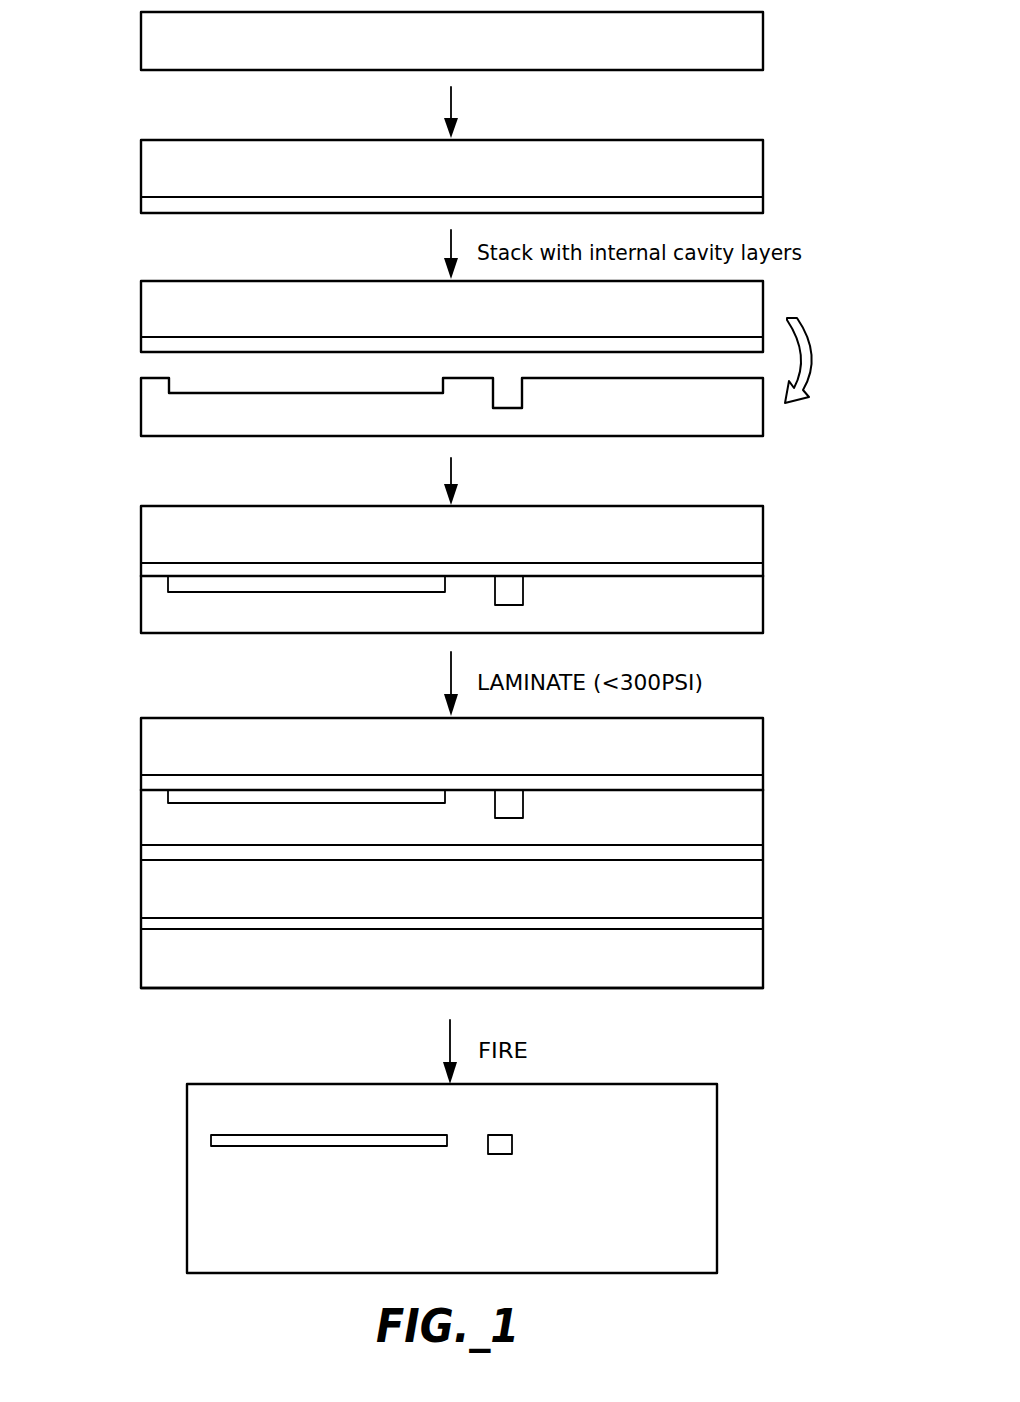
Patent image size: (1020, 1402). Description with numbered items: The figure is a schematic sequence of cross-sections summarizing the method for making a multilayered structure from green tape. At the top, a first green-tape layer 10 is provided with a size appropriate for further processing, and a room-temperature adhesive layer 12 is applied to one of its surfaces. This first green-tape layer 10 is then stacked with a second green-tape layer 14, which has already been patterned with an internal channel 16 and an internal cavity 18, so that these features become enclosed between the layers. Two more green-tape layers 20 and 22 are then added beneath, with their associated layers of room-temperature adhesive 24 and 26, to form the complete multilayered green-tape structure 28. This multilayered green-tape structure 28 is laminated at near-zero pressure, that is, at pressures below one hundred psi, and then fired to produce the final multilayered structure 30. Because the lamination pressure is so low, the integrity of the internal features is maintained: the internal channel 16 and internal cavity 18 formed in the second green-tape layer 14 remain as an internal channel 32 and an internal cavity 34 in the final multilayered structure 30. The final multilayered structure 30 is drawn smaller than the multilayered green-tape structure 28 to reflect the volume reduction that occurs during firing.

The first green-tape layer 10 is at (150, 33).
The room-temperature adhesive layer 12 is at (150, 206).
The second green-tape layer 14 is at (150, 408).
The internal channel 16 is at (187, 392).
The internal cavity 18 is at (502, 388).
The green-tape layer 20 is at (150, 892).
The green-tape layer 22 is at (150, 963).
The room-temperature adhesive layer 24 is at (150, 853).
The room-temperature adhesive layer 26 is at (150, 923).
The multilayered green-tape structure 28 is at (138, 700).
The final multilayered structure 30 is at (203, 1201).
The internal channel 32 is at (215, 1140).
The internal cavity 34 is at (492, 1143).